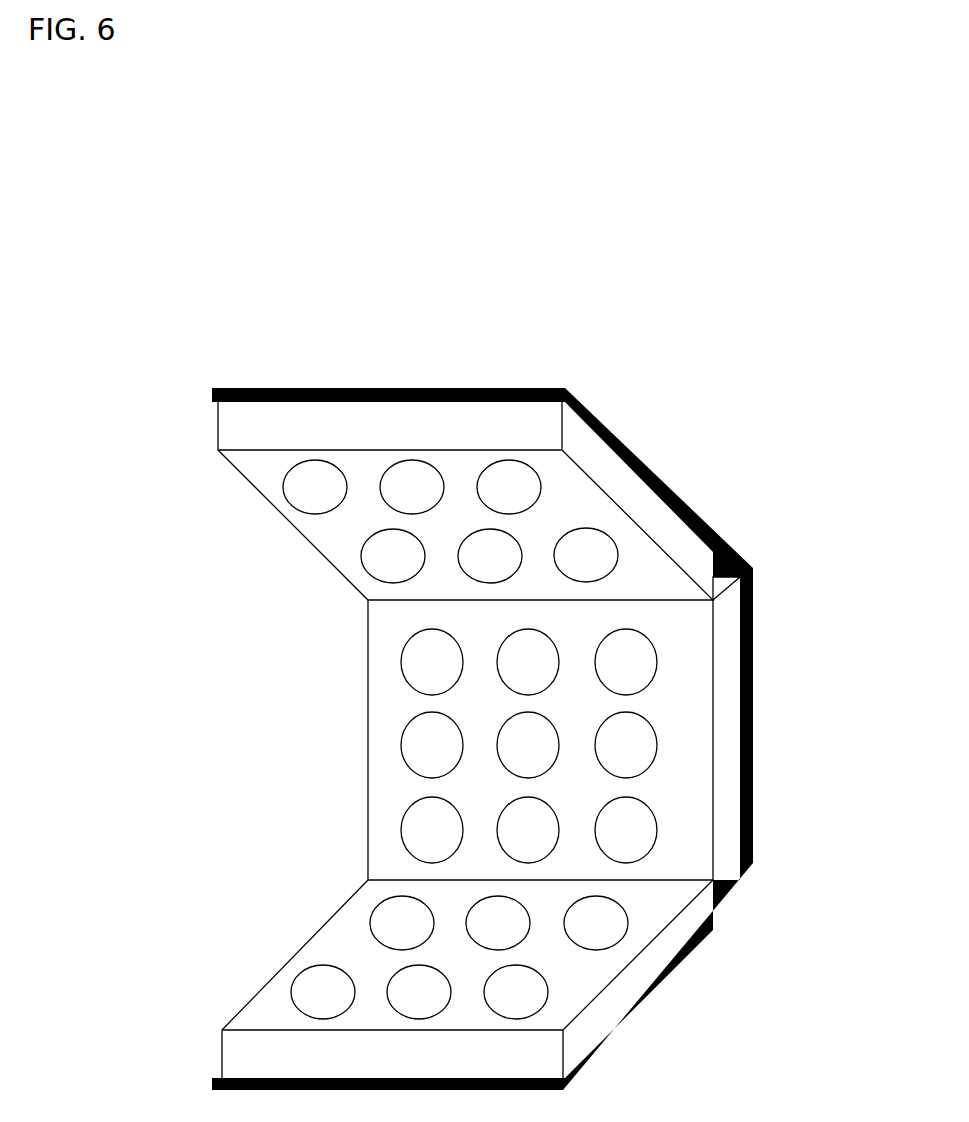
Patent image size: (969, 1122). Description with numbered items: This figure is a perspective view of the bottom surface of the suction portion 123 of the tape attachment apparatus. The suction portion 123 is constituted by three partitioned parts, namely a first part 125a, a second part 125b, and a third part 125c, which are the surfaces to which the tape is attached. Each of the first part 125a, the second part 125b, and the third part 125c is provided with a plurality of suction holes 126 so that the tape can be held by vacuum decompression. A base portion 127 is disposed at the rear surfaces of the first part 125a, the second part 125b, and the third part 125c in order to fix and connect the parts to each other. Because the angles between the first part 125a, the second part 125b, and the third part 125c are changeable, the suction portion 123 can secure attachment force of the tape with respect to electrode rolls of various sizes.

The suction portion 123 is at (632, 358).
The first part 125a is at (323, 528).
The second part 125b is at (387, 722).
The third part 125c is at (347, 940).
The suction holes 126 is at (603, 550).
The base portion 127 is at (743, 892).